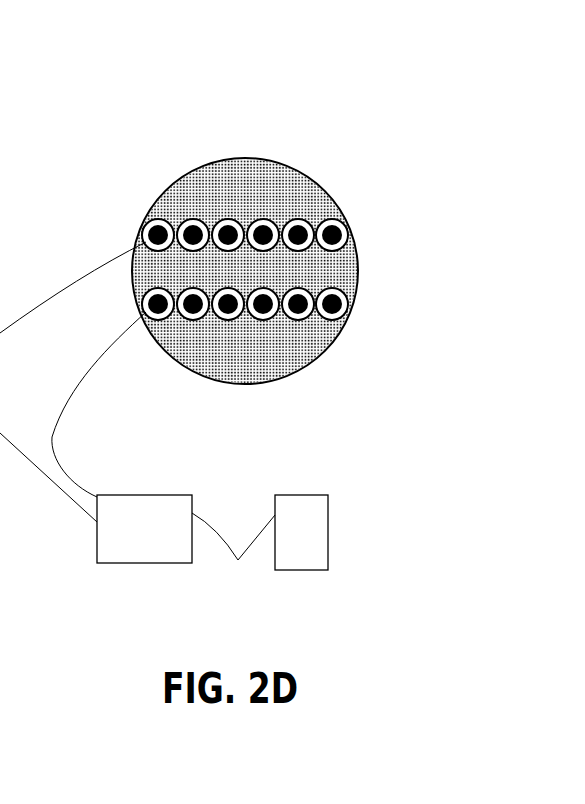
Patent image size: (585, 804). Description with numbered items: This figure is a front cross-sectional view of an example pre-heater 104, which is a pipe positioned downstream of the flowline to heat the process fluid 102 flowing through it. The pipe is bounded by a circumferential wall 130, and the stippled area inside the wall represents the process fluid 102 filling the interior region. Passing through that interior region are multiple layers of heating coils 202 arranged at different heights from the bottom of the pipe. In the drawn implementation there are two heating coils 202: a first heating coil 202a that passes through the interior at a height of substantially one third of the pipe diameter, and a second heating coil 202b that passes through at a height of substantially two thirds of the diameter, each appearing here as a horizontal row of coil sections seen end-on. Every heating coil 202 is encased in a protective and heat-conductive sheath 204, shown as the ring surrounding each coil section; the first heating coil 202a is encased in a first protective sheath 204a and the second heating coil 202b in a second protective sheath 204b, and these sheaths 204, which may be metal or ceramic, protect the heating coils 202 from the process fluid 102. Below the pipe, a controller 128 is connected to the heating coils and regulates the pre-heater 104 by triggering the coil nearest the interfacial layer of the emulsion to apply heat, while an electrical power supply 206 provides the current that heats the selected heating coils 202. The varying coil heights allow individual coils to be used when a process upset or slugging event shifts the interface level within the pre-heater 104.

The process fluid 102 is at (217, 185).
The pre-heater 104 is at (277, 257).
The circumferential wall 130 is at (181, 180).
The heating coils 202 is at (133, 311).
The first heating coil 202a is at (150, 232).
The second heating coil 202b is at (158, 306).
The protective sheath 204 is at (435, 227).
The first protective sheath 204a is at (337, 223).
The second protective sheath 204b is at (348, 288).
The controller 128 is at (125, 563).
The electrical power supply 206 is at (328, 537).